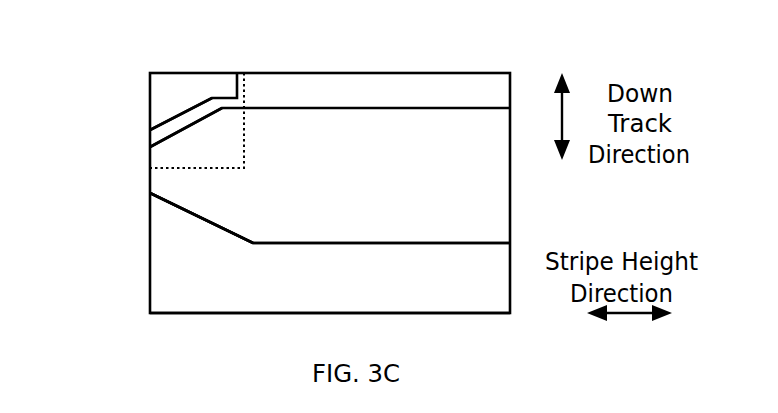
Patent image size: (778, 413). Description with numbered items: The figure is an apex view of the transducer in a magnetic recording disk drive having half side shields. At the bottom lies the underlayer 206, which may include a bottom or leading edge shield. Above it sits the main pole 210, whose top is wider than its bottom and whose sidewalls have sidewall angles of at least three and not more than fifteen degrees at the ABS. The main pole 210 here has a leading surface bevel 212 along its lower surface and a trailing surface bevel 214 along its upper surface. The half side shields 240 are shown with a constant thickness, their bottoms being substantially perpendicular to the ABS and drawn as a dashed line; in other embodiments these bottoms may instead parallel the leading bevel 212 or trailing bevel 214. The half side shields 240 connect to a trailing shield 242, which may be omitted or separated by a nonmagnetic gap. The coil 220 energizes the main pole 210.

The coil 220 is at (87, 42).
The trailing shield 242 is at (200, 73).
The trailing surface bevel 214 is at (156, 110).
The half side shields 240 is at (187, 168).
The leading surface bevel 212 is at (160, 226).
The main pole 210 is at (330, 175).
The underlayer 206 is at (330, 253).